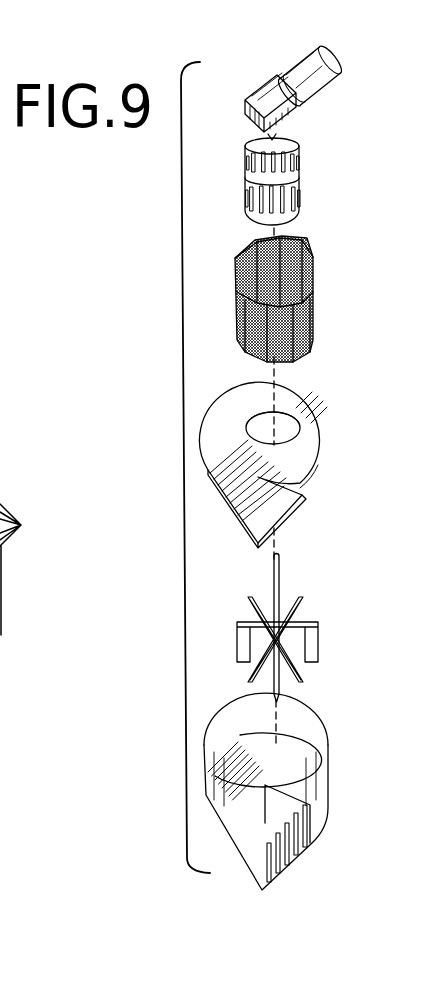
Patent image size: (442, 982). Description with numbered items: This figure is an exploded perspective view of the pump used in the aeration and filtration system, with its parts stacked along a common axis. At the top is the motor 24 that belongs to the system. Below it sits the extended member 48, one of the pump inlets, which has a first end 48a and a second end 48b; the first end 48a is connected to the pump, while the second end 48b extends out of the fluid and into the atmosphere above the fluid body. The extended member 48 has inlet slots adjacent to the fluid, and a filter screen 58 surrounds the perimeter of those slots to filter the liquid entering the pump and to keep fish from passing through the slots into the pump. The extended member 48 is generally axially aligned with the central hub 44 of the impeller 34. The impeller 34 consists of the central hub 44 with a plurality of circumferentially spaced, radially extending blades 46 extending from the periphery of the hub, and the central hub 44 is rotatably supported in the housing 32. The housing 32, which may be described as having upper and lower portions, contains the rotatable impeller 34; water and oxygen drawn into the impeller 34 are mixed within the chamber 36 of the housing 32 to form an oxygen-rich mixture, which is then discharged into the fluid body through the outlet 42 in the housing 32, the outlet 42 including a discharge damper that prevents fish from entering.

The motor 24 is at (318, 62).
The extended member 48 is at (324, 175).
The second end 48b is at (300, 152).
The first end 48a is at (300, 221).
The filter screen 58 is at (314, 318).
The impeller 34 is at (323, 620).
The central hub 44 is at (280, 646).
The blades 46 is at (298, 608).
The housing 32 is at (322, 722).
The chamber 36 is at (290, 760).
The outlet 42 is at (300, 858).